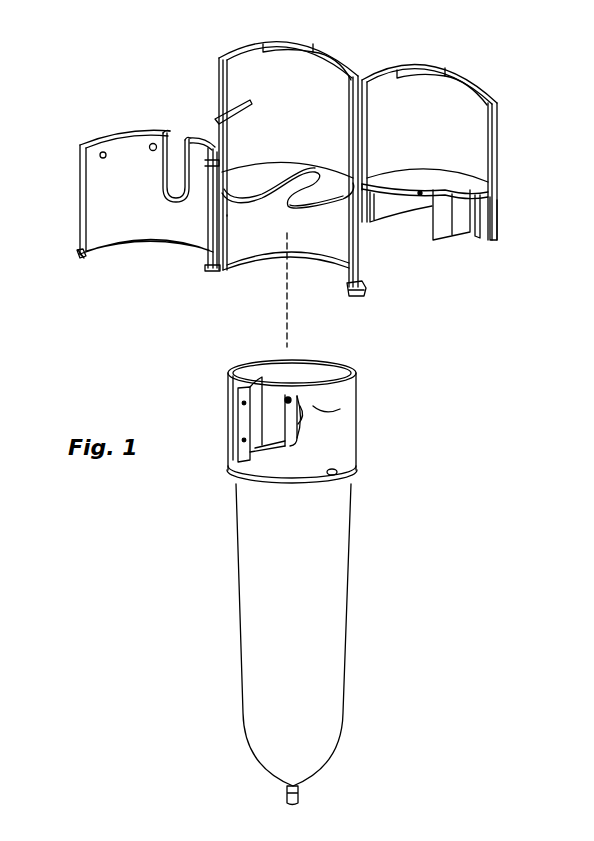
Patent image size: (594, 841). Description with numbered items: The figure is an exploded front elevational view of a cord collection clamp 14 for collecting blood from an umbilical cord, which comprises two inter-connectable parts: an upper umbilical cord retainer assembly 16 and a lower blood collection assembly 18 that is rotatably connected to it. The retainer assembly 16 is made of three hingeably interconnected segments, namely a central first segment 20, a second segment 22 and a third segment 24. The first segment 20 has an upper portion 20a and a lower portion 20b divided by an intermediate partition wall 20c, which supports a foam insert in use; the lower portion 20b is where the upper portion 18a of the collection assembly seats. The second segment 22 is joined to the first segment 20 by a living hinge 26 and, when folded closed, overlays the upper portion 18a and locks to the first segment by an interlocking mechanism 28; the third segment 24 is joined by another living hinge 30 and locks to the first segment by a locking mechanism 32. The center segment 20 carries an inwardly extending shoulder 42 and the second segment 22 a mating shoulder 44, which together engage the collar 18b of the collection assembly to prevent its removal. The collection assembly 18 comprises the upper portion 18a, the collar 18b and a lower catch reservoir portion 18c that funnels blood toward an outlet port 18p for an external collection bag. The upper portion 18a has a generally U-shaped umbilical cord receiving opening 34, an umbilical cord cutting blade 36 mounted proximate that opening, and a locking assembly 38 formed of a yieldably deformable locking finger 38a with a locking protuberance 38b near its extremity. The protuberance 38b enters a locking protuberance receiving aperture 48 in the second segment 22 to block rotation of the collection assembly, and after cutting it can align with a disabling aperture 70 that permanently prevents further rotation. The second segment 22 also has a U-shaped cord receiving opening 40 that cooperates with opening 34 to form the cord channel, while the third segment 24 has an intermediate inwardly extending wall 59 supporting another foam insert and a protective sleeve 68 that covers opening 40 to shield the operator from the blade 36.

The cord collection clamp 14 is at (430, 356).
The umbilical cord retainer assembly 16 is at (516, 130).
The blood collection assembly 18 is at (364, 572).
The upper portion of the collection assembly 18a is at (343, 447).
The collar 18b is at (338, 474).
The lower catch reservoir portion 18c is at (306, 708).
The outlet port 18p is at (300, 795).
The first segment 20 is at (217, 72).
The upper portion of the first segment 20a is at (303, 88).
The lower portion of the first segment 20b is at (336, 230).
The intermediate partition wall 20c is at (248, 172).
The second segment 22 is at (100, 135).
The third segment 24 is at (477, 80).
The living hinge 26 is at (210, 248).
The interlocking mechanism 28 is at (66, 248).
The living hinge 30 is at (352, 118).
The locking mechanism 32 is at (205, 106).
The umbilical cord receiving opening 34 is at (258, 422).
The umbilical cord cutting blade 36 is at (252, 388).
The locking assembly 38 is at (302, 389).
The locking finger 38a is at (296, 416).
The locking protuberance 38b is at (322, 409).
The cord receiving opening 40 is at (173, 165).
The shoulder 42 is at (267, 259).
The shoulder 44 is at (123, 244).
The locking protuberance receiving aperture 48 is at (151, 142).
The intermediate inwardly extending wall 59 is at (474, 187).
The protective sleeve 68 is at (452, 234).
The disabling aperture 70 is at (99, 158).